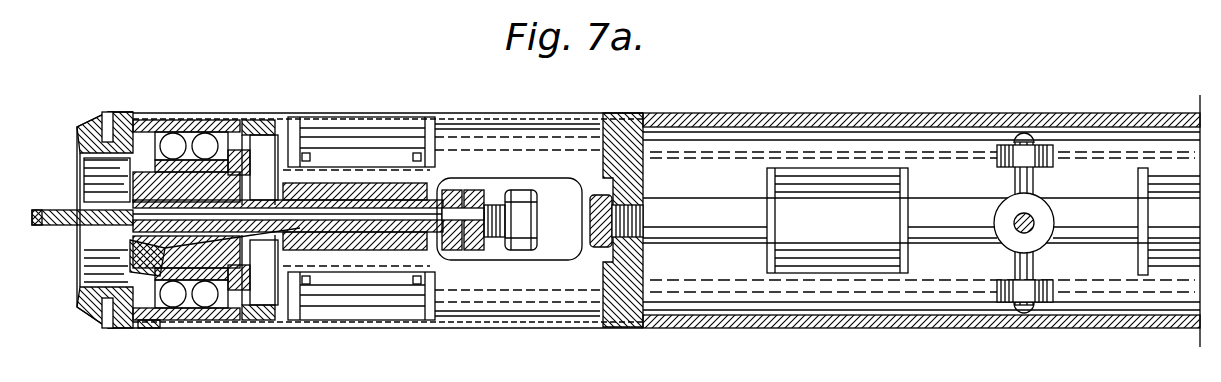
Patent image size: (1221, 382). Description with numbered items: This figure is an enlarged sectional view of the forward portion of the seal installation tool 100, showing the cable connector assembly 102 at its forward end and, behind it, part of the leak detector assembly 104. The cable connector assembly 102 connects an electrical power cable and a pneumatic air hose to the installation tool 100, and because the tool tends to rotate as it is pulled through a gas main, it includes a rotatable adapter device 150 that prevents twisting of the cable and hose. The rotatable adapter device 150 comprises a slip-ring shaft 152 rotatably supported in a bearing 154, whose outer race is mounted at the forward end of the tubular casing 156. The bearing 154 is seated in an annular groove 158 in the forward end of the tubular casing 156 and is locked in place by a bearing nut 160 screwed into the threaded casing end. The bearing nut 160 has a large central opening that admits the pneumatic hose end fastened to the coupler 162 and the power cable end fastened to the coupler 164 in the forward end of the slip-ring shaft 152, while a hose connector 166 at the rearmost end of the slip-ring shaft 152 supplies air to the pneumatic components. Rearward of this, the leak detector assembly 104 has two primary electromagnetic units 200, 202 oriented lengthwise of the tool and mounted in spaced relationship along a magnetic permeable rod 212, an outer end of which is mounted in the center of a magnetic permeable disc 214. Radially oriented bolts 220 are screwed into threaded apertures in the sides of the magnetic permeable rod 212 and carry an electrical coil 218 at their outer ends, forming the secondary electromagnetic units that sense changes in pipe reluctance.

The seal installation tool 100 is at (113, 95).
The cable connector assembly 102 is at (352, 110).
The leak detector assembly 104 is at (1054, 107).
The rotatable adapter device 150 is at (274, 125).
The slip-ring shaft 152 is at (355, 195).
The bearing 154 is at (229, 135).
The tubular casing 156 is at (182, 120).
The annular groove 158 is at (200, 320).
The bearing nut 160 is at (158, 326).
The coupler 162 is at (130, 258).
The coupler 164 is at (135, 186).
The hose connector 166 is at (521, 215).
The primary electromagnetic unit 200 is at (830, 190).
The primary electromagnetic unit 202 is at (1170, 175).
The magnetic permeable rod 212 is at (725, 205).
The magnetic permeable disc 214 is at (660, 128).
The electrical coil 218 is at (1045, 158).
The bolt 220 is at (1036, 186).